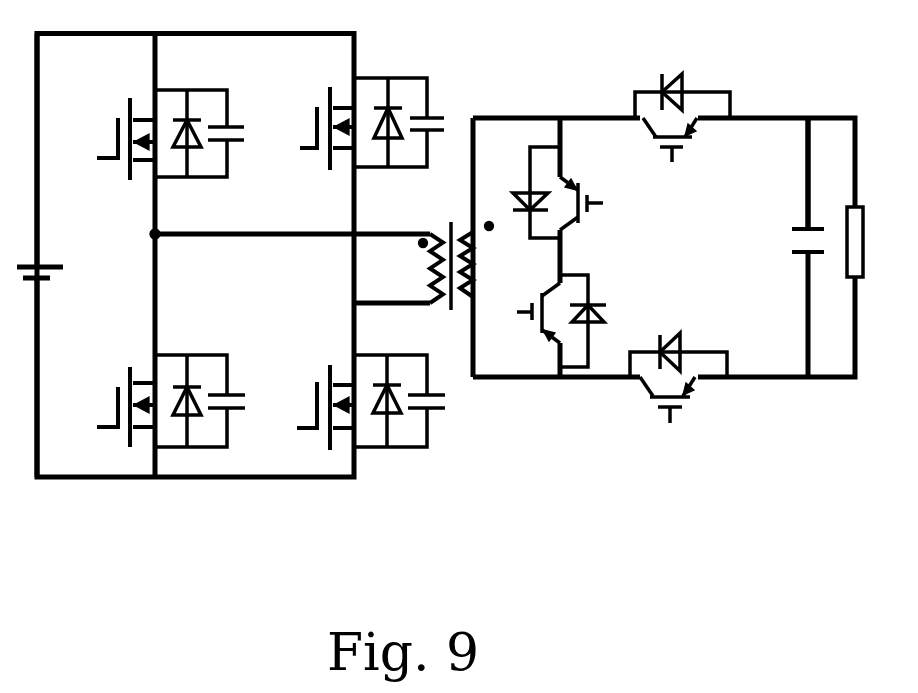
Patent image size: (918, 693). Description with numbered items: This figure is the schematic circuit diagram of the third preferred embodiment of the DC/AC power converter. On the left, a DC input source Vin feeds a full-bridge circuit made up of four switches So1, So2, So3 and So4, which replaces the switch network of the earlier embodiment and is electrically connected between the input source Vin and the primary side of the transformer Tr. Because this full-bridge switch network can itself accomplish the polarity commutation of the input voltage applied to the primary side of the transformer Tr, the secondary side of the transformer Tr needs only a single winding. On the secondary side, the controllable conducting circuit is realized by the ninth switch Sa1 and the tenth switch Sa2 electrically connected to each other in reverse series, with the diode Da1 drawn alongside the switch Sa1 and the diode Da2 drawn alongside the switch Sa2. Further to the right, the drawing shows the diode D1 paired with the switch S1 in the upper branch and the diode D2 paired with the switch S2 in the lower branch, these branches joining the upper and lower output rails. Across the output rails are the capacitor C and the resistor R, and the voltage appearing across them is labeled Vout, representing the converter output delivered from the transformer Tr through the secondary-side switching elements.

The switch So1 is at (149, 135).
The switch So2 is at (351, 124).
The switch So3 is at (148, 401).
The switch So4 is at (350, 402).
The DC input source Vin is at (50, 256).
The transformer Tr is at (451, 245).
The auxiliary diode Da1 is at (520, 192).
The ninth switch Sa1 is at (586, 195).
The tenth switch Sa2 is at (519, 313).
The auxiliary diode Da2 is at (603, 321).
The rectifier diode D1 is at (682, 83).
The synchronous rectifier switch S1 is at (670, 158).
The rectifier diode D2 is at (678, 340).
The synchronous rectifier switch S2 is at (667, 417).
The output capacitor C is at (789, 246).
The load resistor R is at (869, 242).
The output voltage Vout is at (772, 173).